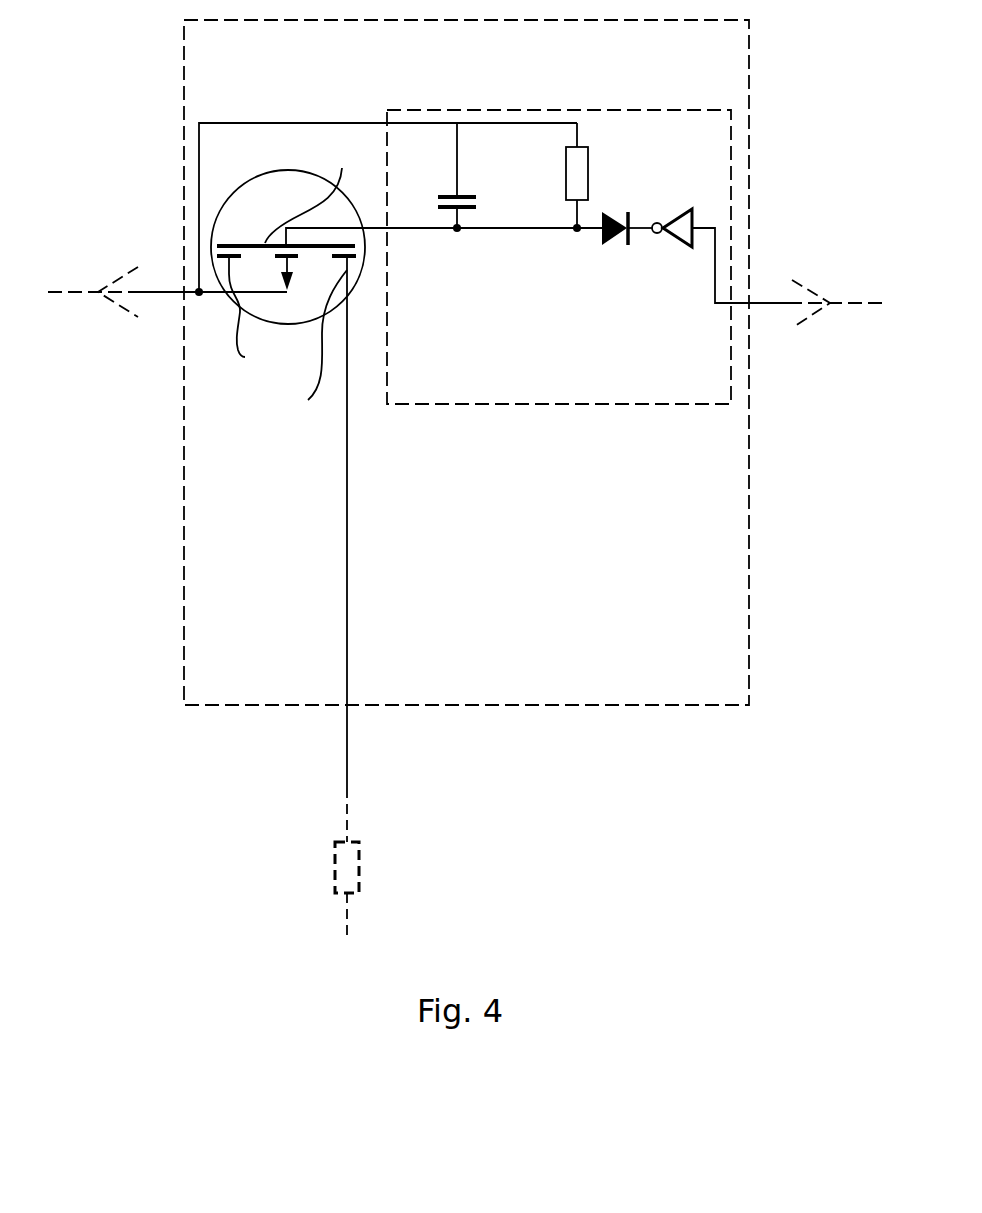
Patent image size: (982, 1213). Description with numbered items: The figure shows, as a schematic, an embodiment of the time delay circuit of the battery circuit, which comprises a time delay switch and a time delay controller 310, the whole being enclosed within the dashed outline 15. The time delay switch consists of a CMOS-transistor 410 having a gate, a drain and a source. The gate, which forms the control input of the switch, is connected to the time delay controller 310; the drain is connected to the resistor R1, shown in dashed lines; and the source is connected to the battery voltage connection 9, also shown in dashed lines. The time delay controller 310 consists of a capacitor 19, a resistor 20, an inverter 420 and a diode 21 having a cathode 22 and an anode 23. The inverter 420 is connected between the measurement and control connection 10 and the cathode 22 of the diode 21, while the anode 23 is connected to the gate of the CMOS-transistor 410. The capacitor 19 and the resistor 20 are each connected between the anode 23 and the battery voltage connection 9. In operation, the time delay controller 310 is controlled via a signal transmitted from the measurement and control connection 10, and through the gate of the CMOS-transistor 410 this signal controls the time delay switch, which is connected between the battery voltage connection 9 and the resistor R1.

The battery voltage connection 9 is at (120, 320).
The measurement and control connection 10 is at (808, 334).
The circuit enclosure 15 is at (455, 708).
The capacitor 19 is at (452, 192).
The resistor 20 is at (564, 175).
The diode 21 is at (616, 246).
The cathode 22 is at (632, 245).
The anode 23 is at (598, 236).
The time delay controller 310 is at (562, 407).
The CMOS-transistor 410 is at (291, 323).
The inverter 420 is at (677, 218).
The resistor R1 is at (360, 868).